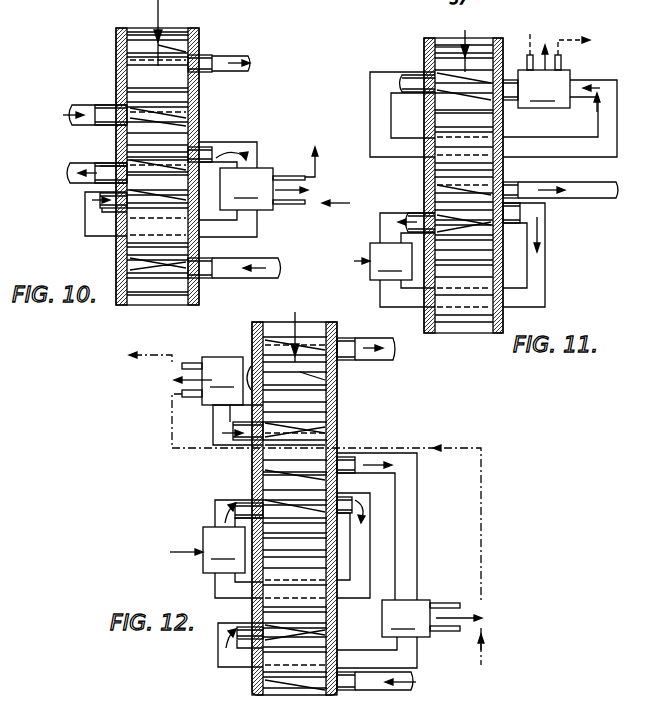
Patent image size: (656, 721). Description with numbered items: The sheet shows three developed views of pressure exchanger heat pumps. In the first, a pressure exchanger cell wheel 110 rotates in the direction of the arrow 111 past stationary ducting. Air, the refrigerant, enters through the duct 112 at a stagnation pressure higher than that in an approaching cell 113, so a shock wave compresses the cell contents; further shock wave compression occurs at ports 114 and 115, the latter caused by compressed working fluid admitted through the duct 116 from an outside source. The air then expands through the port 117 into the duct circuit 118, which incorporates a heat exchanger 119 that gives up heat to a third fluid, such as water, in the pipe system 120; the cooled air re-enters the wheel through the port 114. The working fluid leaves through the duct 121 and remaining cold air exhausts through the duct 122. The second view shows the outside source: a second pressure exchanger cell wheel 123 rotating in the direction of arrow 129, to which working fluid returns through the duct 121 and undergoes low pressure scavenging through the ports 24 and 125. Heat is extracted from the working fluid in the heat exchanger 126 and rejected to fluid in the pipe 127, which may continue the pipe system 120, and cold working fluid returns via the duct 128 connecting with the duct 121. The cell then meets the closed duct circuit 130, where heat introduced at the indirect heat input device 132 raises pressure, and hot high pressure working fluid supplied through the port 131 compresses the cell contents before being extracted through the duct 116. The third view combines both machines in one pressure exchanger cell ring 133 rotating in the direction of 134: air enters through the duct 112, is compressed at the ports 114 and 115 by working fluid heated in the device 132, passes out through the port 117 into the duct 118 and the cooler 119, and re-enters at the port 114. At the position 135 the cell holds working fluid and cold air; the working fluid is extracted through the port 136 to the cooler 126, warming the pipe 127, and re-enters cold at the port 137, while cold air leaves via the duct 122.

In FIG. 11, the port 24 is at (506, 100).
In FIG. 10, the pressure exchanger cell wheel 110 is at (200, 30).
In FIG. 10, the arrow 111 is at (200, 44).
In FIG. 10, the duct 112 is at (227, 278).
In FIG. 12, the duct 112 is at (412, 673).
In FIG. 10, the cell 113 is at (142, 283).
In FIG. 10, the port 114 is at (88, 218).
In FIG. 12, the port 114 is at (252, 627).
In FIG. 10, the port 115 is at (108, 162).
In FIG. 12, the port 115 is at (240, 505).
In FIG. 10, the duct 116 is at (80, 163).
In FIG. 11, the duct 116 is at (595, 199).
In FIG. 10, the port 117 is at (200, 152).
In FIG. 12, the port 117 is at (351, 472).
In FIG. 10, the duct circuit 118 is at (257, 147).
In FIG. 12, the duct circuit 118 is at (417, 490).
In FIG. 10, the heat exchanger 119 is at (283, 189).
In FIG. 12, the heat exchanger 119 is at (452, 618).
In FIG. 10, the pipe system 120 is at (331, 207).
In FIG. 12, the pipe system 120 is at (487, 661).
In FIG. 10, the duct 121 is at (90, 105).
In FIG. 11, the duct 121 is at (612, 100).
In FIG. 10, the exhaust duct 122 is at (240, 55).
In FIG. 12, the exhaust duct 122 is at (364, 360).
In FIG. 11, the second pressure exchanger cell wheel 123 is at (503, 50).
In FIG. 11, the port 125 is at (427, 82).
In FIG. 11, the heat exchanger 126 is at (544, 66).
In FIG. 12, the heat exchanger 126 is at (185, 381).
In FIG. 11, the pipe 127 is at (592, 42).
In FIG. 12, the pipe 127 is at (172, 429).
In FIG. 11, the duct 128 is at (618, 136).
In FIG. 11, the arrow 129 is at (462, 47).
In FIG. 11, the closed duct circuit 130 is at (547, 254).
In FIG. 11, the port 131 is at (420, 213).
In FIG. 11, the indirect heat input device 132 is at (380, 260).
In FIG. 12, the indirect heat input device 132 is at (195, 549).
In FIG. 12, the pressure exchanger cell ring 133 is at (338, 399).
In FIG. 12, the direction of rotation 134 is at (297, 336).
In FIG. 12, the cell position 135 is at (328, 445).
In FIG. 12, the port 136 is at (247, 440).
In FIG. 12, the port 137 is at (253, 372).